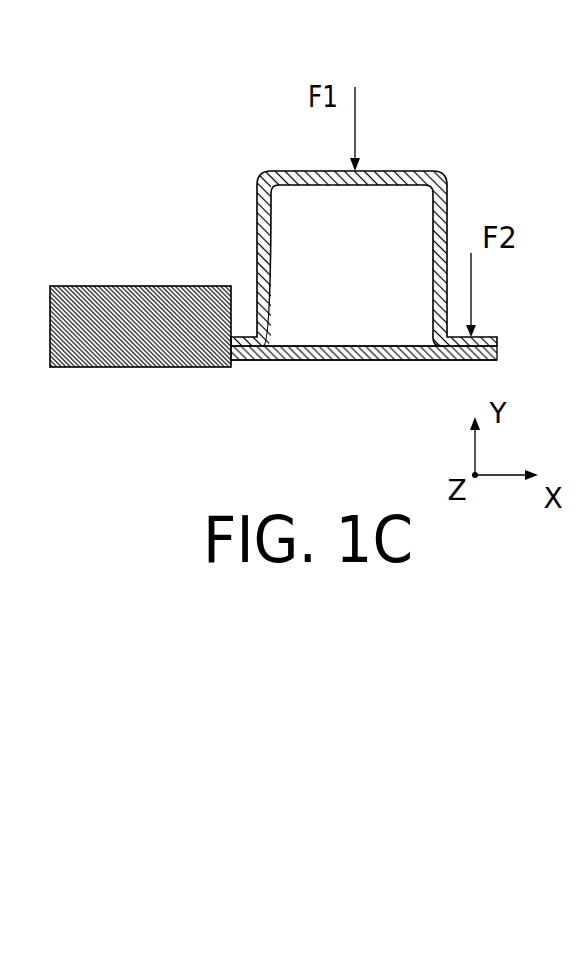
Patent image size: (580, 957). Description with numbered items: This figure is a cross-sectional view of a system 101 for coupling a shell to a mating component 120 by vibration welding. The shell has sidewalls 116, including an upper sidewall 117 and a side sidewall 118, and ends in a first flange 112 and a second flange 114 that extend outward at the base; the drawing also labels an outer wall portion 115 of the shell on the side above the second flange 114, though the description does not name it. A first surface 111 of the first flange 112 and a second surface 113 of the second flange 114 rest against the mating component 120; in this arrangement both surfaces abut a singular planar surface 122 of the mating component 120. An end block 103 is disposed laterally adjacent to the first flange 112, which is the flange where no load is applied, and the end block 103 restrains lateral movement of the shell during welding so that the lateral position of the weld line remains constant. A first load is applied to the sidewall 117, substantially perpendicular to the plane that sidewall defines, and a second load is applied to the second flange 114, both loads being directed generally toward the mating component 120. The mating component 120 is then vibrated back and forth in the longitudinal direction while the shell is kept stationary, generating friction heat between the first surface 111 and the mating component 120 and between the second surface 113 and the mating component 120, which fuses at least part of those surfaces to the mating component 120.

The system 101 is at (311, 223).
The end block 103 is at (70, 327).
The first surface 111 is at (250, 360).
The first flange 112 is at (249, 345).
The second surface 113 is at (458, 360).
The second flange 114 is at (487, 338).
The outer side surface 115 is at (437, 212).
The sidewalls 116 is at (445, 238).
The sidewall 117 is at (390, 181).
The sidewall 118 is at (257, 202).
The mating component 120 is at (365, 360).
The singular planar surface 122 is at (352, 346).